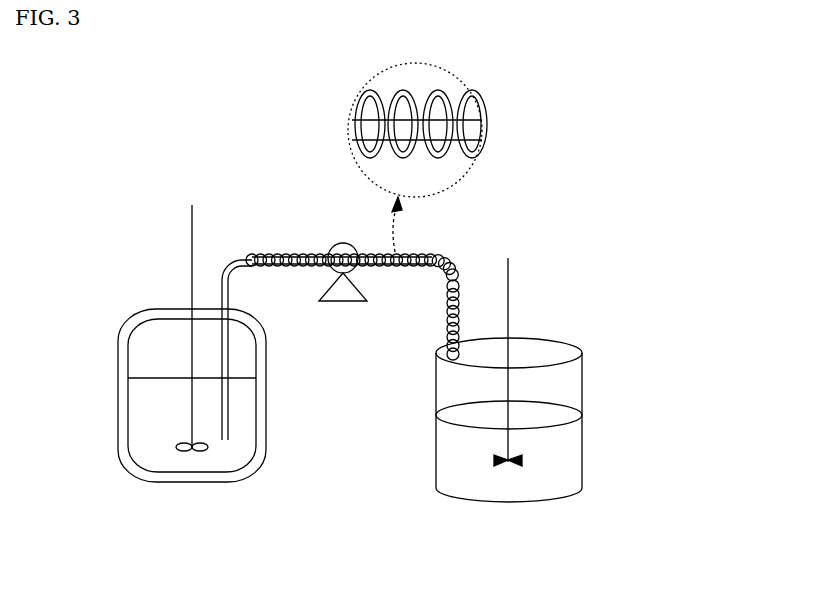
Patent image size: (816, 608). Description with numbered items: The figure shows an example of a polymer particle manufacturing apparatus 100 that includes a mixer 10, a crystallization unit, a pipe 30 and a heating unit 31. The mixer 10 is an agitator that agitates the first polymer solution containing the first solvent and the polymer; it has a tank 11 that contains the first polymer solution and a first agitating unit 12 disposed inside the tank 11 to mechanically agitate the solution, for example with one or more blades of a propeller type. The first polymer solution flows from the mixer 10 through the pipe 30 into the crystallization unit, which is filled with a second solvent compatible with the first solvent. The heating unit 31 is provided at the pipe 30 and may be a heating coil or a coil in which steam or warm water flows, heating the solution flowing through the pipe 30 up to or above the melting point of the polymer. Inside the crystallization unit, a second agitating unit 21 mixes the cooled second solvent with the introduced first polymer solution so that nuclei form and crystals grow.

The polymer particle manufacturing apparatus 100 is at (137, 134).
The mixer 10 is at (104, 331).
The tank 11 is at (193, 478).
The first agitating unit 12 is at (185, 405).
The second agitating unit 21 is at (528, 461).
The pipe 30 is at (236, 275).
The heating unit 31 is at (282, 254).